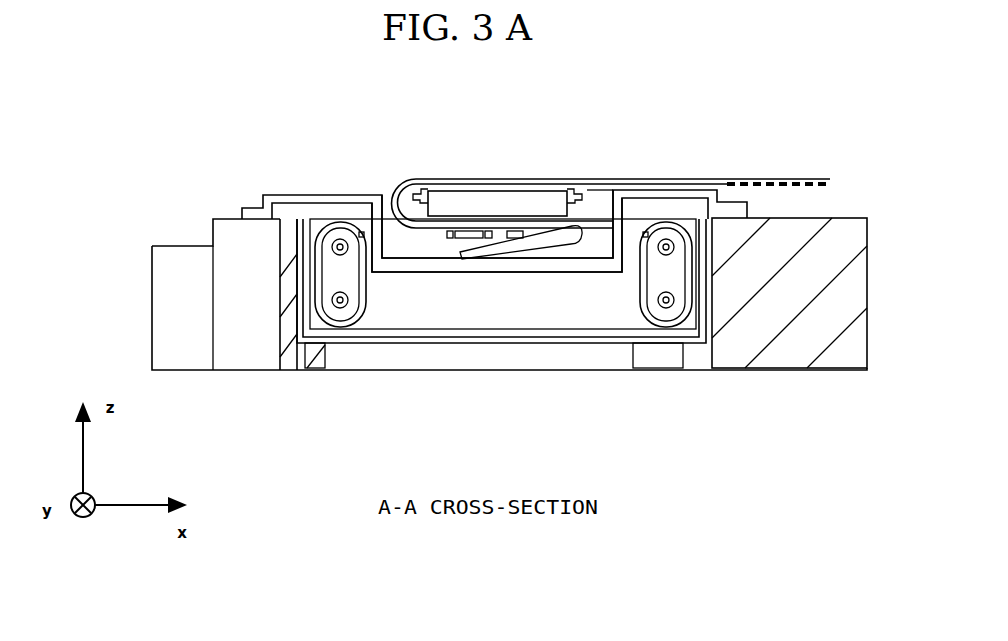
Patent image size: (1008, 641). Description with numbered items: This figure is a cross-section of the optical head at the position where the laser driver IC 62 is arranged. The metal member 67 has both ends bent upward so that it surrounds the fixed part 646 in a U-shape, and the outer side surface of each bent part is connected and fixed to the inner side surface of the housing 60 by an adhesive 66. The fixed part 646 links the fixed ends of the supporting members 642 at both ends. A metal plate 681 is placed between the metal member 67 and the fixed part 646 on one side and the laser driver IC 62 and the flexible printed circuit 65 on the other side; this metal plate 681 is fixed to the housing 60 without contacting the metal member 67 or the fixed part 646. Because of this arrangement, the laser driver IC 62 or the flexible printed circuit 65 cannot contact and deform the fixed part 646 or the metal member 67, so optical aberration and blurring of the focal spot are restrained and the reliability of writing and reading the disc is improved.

The housing 60 is at (496, 239).
The adhesive 66 is at (497, 190).
The supporting member 642 is at (442, 286).
The laser driver IC 62 is at (513, 183).
The metal plate 681 is at (497, 190).
The flexible printed circuit 65 is at (611, 168).
The metal member 67 is at (501, 341).
The fixed part 646 is at (507, 390).